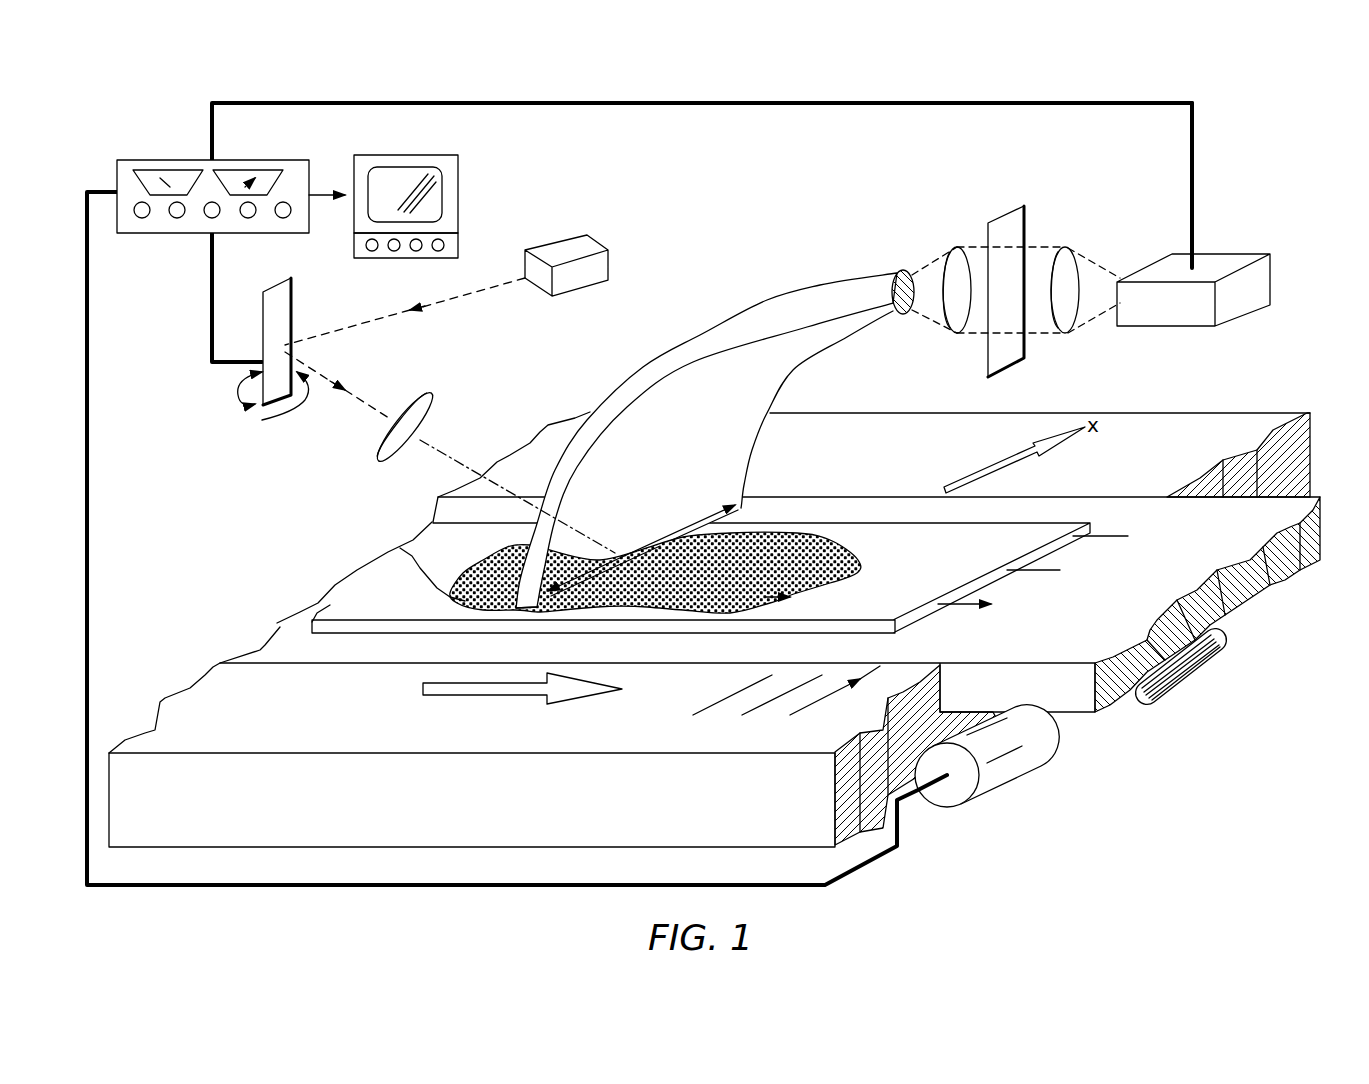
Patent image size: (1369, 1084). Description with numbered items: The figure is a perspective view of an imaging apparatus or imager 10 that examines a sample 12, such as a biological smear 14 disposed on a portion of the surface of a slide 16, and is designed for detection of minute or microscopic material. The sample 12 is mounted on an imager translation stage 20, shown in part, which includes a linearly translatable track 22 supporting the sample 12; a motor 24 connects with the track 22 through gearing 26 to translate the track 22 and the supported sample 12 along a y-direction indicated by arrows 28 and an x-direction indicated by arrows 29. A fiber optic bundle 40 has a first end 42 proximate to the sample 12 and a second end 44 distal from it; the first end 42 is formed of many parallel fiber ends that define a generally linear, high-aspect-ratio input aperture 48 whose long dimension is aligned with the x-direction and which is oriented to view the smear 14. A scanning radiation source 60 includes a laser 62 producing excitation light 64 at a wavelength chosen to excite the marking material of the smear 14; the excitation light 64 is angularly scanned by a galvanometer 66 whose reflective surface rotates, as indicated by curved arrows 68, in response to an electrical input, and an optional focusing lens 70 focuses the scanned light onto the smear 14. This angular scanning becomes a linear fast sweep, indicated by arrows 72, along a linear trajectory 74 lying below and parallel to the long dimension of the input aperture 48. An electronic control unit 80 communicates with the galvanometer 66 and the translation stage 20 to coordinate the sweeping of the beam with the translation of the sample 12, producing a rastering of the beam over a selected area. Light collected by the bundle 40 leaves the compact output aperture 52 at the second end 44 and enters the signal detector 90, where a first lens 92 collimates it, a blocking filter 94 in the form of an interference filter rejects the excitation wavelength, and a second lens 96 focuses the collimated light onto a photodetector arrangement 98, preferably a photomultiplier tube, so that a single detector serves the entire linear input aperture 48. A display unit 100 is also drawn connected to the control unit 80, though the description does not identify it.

The imaging apparatus 10 is at (1195, 798).
The sample 12 is at (445, 527).
The biological smear 14 is at (400, 548).
The slide 16 is at (360, 603).
The imager translation stage 20 is at (178, 675).
The linearly translatable track 22 is at (290, 642).
The motor 24 is at (1003, 765).
The gearing 26 is at (1193, 668).
The arrows indicating y-direction 28 is at (1033, 568).
The arrows indicating x-direction 29 is at (817, 703).
The fiber optic bundle 40 is at (683, 337).
The first end 42 is at (525, 607).
The second end 44 is at (896, 272).
The input aperture 48 is at (740, 512).
The output aperture 52 is at (913, 277).
The scanning radiation source 60 is at (197, 393).
The laser 62 is at (588, 240).
The excitation light 64 is at (487, 286).
The galvanometer 66 is at (290, 300).
The curved arrows 68 is at (271, 405).
The focusing lens 70 is at (437, 398).
The arrows indicating linear sweeping 72 is at (603, 556).
The linear trajectory 74 is at (640, 570).
The electronic control unit 80 is at (170, 158).
The signal detector 90 is at (1210, 178).
The first lens 92 is at (955, 333).
The blocking filter 94 is at (1003, 368).
The second lens 96 is at (1068, 333).
The photodetector arrangement 98 is at (1180, 318).
The display monitor 100 is at (405, 155).